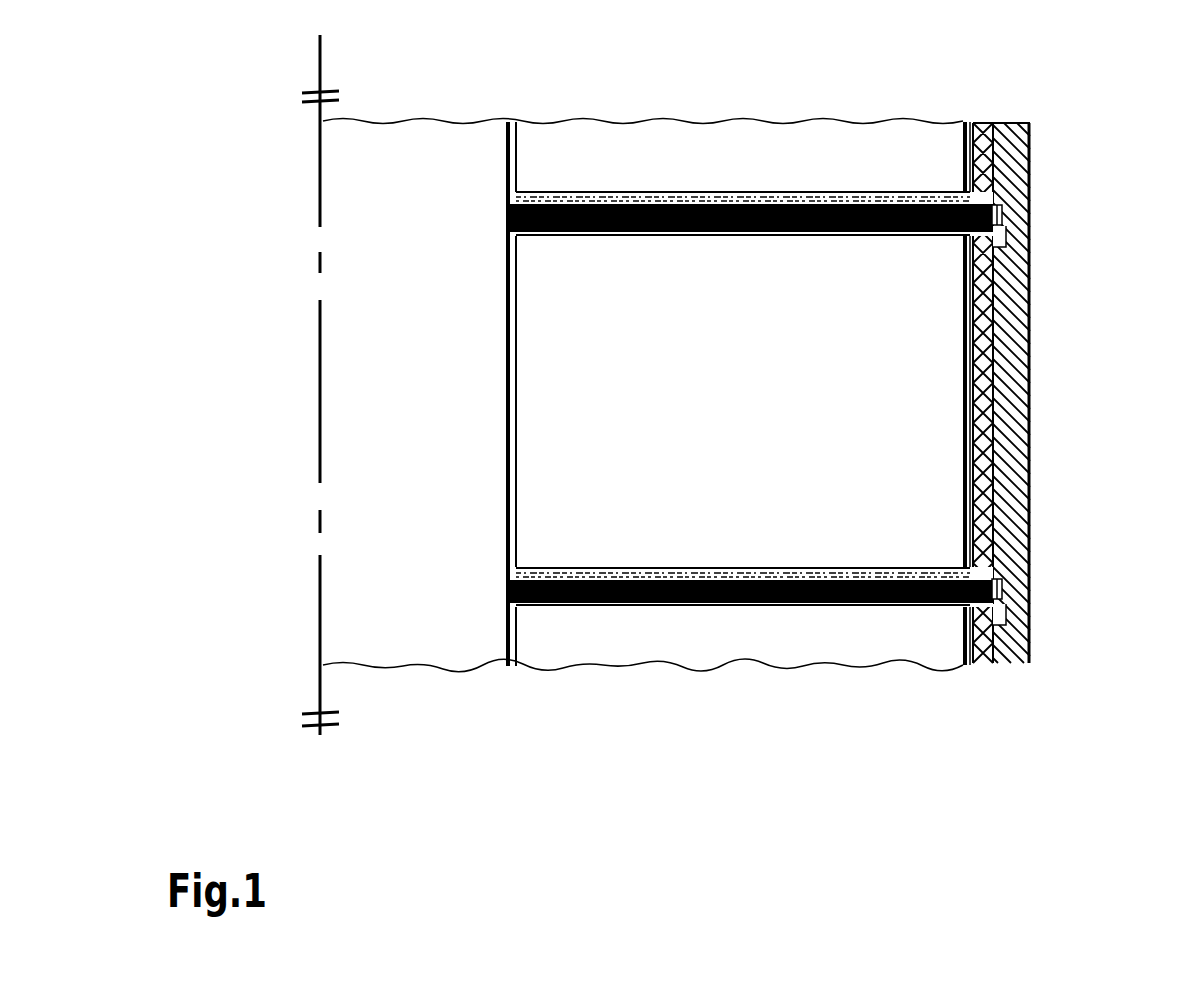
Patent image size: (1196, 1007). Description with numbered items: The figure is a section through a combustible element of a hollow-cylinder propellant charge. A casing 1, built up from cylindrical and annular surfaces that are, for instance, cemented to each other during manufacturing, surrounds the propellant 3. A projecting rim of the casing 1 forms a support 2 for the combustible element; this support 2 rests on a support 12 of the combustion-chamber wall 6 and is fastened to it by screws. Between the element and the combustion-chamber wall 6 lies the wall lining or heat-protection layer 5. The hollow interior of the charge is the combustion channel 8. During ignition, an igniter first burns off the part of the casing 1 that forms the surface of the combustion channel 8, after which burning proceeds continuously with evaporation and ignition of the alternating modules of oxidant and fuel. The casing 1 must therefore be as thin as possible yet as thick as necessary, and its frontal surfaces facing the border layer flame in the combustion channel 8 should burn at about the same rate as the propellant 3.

The casing 1 is at (533, 155).
The support 2 is at (1000, 217).
The propellant 3 is at (751, 388).
The wall lining/heat-protection layer 5 is at (985, 663).
The combustion-chamber wall 6 is at (1015, 662).
The combustion channel 8 is at (339, 385).
The support 12 is at (997, 245).